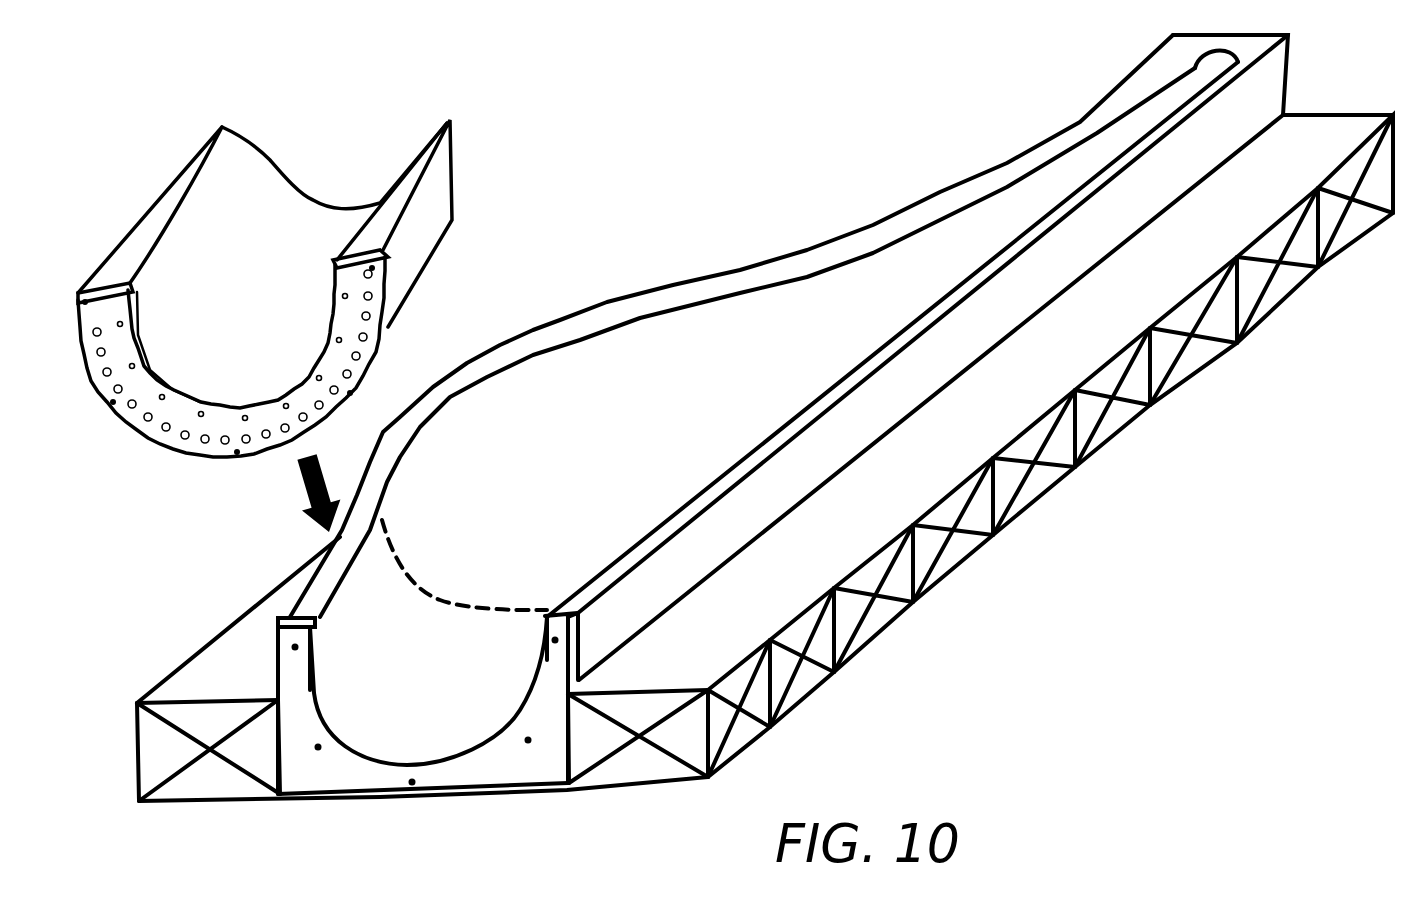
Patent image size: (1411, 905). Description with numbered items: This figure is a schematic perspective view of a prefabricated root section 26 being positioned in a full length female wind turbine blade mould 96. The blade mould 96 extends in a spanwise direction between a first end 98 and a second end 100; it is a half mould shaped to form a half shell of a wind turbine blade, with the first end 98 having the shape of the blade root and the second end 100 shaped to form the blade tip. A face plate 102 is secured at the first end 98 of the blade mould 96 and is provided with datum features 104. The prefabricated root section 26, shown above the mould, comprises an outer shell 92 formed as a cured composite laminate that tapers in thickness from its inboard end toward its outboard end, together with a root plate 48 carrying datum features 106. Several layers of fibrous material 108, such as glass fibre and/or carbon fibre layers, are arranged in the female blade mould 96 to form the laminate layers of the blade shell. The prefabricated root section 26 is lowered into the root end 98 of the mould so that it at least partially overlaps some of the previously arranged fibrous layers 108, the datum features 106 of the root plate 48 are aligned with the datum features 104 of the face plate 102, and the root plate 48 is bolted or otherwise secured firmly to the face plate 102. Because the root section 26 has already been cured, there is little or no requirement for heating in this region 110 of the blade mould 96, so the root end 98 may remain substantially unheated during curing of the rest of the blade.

The prefabricated root section 26 is at (254, 326).
The outer shell 92 is at (263, 312).
The root plate 48 is at (203, 447).
The datum features 106 is at (113, 405).
The female wind turbine blade mould 96 is at (783, 232).
The first end 98 is at (556, 803).
The second end 100 is at (1160, 33).
The face plate 102 is at (293, 780).
The datum features 104 is at (410, 787).
The layers of fibrous material 108 is at (732, 385).
The region 110 is at (473, 714).